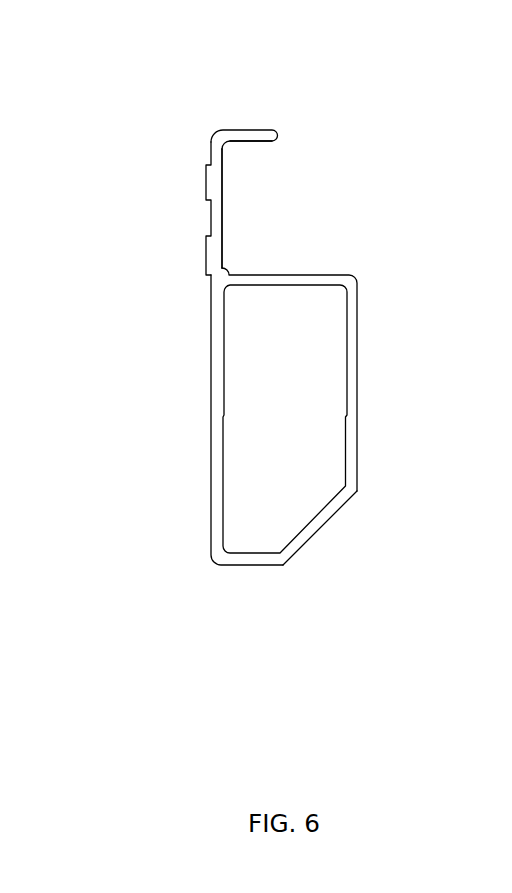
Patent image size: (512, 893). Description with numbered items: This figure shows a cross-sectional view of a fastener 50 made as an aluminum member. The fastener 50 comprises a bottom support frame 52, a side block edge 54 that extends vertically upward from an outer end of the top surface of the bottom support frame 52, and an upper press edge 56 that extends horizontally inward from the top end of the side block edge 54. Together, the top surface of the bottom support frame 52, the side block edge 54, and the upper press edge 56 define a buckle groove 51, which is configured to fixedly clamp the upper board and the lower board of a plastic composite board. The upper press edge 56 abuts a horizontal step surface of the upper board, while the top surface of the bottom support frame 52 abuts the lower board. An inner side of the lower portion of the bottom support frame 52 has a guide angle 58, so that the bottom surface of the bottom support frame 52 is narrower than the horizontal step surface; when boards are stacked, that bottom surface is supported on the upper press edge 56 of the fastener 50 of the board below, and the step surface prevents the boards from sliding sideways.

The fastener 50 is at (263, 324).
The buckle groove 51 is at (265, 203).
The bottom support frame 52 is at (327, 392).
The side block edge 54 is at (213, 218).
The upper press edge 56 is at (255, 133).
The guide angle 58 is at (323, 513).